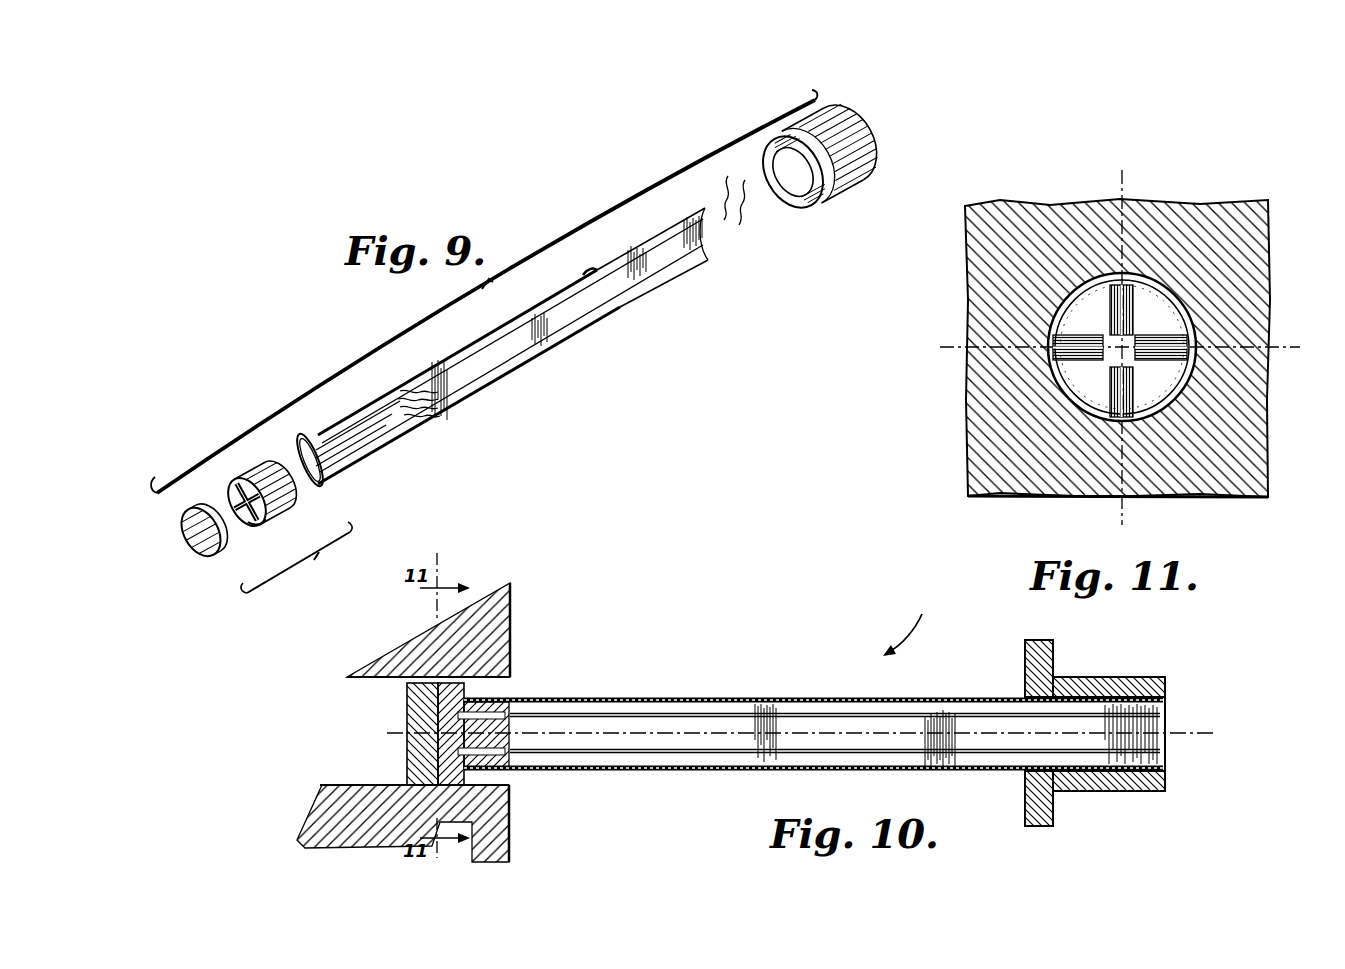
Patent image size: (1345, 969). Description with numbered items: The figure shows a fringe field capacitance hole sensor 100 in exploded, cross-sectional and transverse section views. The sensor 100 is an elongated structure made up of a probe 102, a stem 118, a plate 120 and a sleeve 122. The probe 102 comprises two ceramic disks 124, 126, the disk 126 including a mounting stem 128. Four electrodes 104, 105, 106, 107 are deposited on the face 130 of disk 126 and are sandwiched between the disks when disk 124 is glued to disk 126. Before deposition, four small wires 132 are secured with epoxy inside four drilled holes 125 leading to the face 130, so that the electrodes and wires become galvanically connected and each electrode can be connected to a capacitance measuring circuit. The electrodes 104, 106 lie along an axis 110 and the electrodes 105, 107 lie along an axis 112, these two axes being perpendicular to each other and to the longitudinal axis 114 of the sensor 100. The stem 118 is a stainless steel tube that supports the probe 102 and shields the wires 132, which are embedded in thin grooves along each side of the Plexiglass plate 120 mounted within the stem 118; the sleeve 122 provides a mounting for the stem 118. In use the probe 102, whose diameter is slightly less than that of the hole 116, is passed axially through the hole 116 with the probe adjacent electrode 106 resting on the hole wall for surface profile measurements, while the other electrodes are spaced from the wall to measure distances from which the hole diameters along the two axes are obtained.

In FIG. 9, the sensor 100 is at (489, 428).
In FIG. 10, the sensor 100 is at (911, 622).
In FIG. 9, the probe 102 is at (296, 562).
In FIG. 10, the probe 102 is at (400, 697).
In FIG. 11, the probe 102 is at (1148, 308).
In FIG. 11, the electrode 104 is at (1107, 312).
In FIG. 11, the electrode 105 is at (1170, 343).
In FIG. 11, the electrode 106 is at (1112, 408).
In FIG. 11, the electrode 107 is at (1083, 357).
In FIG. 11, the axis 110 is at (1122, 188).
In FIG. 11, the axis 112 is at (1291, 350).
In FIG. 10, the longitudinal axis 114 is at (1193, 730).
In FIG. 10, the hole 116 is at (505, 685).
In FIG. 11, the hole 116 is at (1170, 297).
In FIG. 9, the stem 118 is at (372, 402).
In FIG. 10, the stem 118 is at (673, 697).
In FIG. 9, the plate 120 is at (648, 286).
In FIG. 10, the plate 120 is at (1156, 741).
In FIG. 9, the sleeve 122 is at (832, 140).
In FIG. 10, the sleeve 122 is at (1122, 684).
In FIG. 9, the disk 124 is at (188, 510).
In FIG. 10, the disk 124 is at (418, 760).
In FIG. 10, the drilled holes 125 is at (462, 715).
In FIG. 9, the disk 126 is at (280, 500).
In FIG. 9, the mounting stem 128 is at (262, 477).
In FIG. 10, the mounting stem 128 is at (476, 773).
In FIG. 9, the face 130 is at (256, 524).
In FIG. 9, the wires 132 is at (740, 204).
In FIG. 10, the wires 132 is at (742, 717).